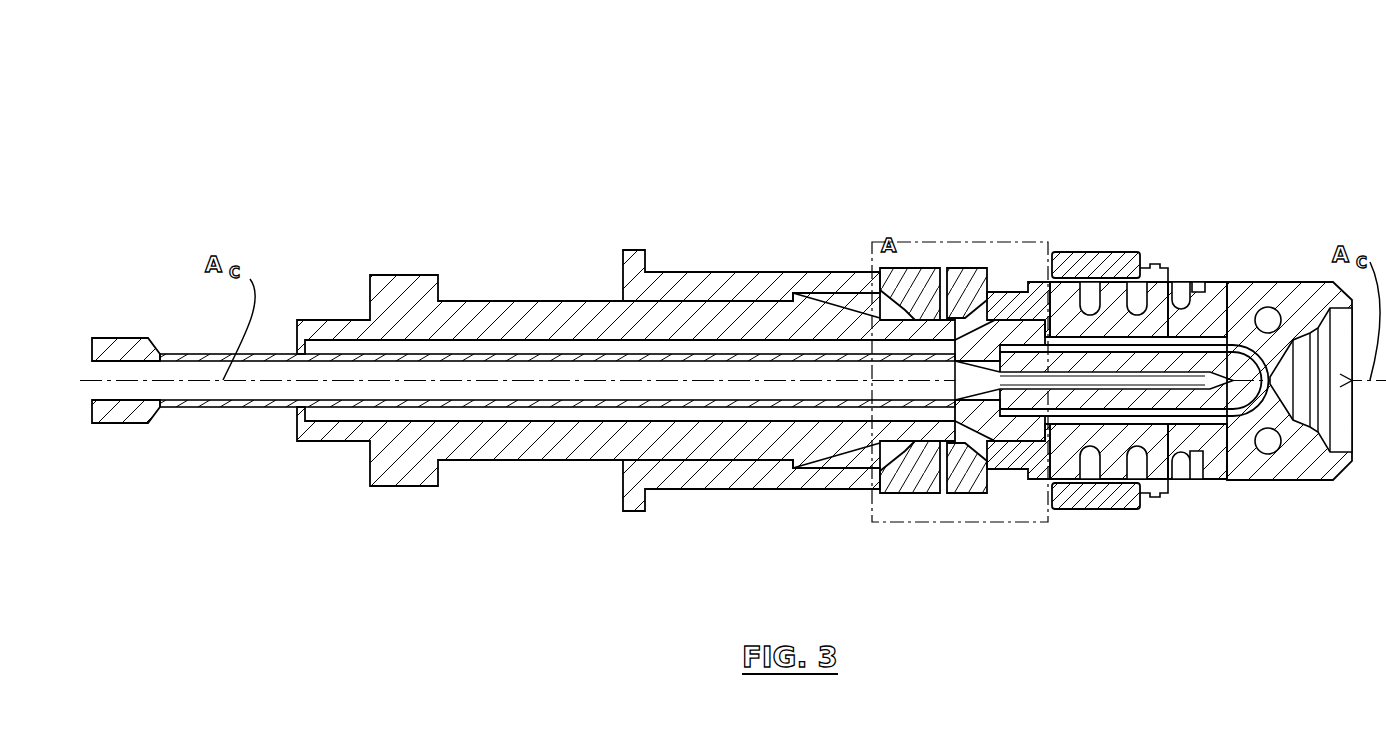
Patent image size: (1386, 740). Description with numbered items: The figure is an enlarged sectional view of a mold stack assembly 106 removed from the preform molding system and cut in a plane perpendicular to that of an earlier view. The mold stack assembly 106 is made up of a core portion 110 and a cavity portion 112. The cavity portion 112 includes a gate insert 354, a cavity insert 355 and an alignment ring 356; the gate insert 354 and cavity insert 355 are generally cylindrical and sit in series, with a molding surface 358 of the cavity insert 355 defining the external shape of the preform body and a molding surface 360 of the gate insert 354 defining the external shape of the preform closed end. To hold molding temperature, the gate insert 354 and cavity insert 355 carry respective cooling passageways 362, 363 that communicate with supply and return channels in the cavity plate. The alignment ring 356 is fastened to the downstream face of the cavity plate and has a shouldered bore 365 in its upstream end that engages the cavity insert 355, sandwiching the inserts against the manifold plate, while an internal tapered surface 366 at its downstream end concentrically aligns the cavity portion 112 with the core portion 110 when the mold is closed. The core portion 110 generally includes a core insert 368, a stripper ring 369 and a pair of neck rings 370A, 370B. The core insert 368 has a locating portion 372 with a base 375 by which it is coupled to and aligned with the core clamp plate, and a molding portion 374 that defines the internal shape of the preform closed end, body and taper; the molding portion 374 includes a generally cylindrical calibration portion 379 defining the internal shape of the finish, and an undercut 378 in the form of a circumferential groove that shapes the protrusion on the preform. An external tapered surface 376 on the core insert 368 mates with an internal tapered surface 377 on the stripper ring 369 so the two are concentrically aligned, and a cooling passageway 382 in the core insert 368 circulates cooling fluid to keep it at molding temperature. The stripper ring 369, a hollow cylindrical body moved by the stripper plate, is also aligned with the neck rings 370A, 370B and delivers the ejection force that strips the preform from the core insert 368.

The mold stack assembly 106 is at (1245, 95).
The core portion 110 is at (1042, 147).
The cavity portion 112 is at (1350, 147).
The gate insert 354 is at (1300, 300).
The cavity insert 355 is at (1142, 275).
The alignment ring 356 is at (1018, 285).
The molding surface 358 is at (1142, 398).
The molding surface 360 is at (1243, 400).
The gate insert cooling passageway 362 is at (1277, 437).
The cavity insert cooling passageway 363 is at (1142, 486).
The shouldered bore 365 is at (1058, 463).
The internal tapered surface 366 is at (1007, 455).
The core insert 368 is at (545, 320).
The stripper ring 369 is at (823, 290).
The neck ring 370A is at (915, 275).
The neck ring 370B is at (987, 292).
The locating portion 372 is at (833, 577).
The molding portion 374 is at (920, 433).
The base 375 is at (398, 470).
The external tapered surface 376 is at (813, 455).
The internal tapered surface 377 is at (840, 433).
The undercut 378 is at (917, 452).
The calibration portion 379 is at (942, 318).
The cooling passageway 382 is at (660, 354).